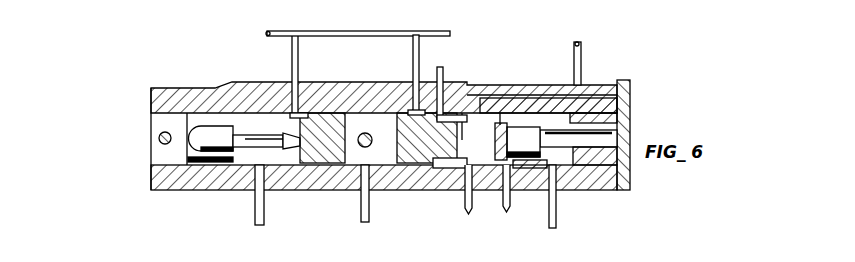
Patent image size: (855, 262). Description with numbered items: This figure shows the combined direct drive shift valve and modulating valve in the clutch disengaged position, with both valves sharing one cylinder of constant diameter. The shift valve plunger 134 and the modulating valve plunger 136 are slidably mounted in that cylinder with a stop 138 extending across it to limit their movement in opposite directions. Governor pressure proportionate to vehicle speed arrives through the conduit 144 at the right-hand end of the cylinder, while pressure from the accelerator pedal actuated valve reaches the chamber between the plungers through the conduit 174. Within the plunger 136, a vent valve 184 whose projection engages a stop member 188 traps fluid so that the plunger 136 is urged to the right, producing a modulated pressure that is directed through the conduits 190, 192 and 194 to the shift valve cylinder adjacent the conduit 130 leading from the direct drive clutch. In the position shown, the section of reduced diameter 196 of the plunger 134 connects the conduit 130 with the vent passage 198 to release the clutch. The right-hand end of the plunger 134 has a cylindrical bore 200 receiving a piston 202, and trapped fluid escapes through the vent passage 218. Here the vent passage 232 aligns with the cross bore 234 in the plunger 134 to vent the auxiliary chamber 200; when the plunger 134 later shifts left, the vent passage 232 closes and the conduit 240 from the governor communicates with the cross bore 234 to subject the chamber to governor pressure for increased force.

The conduit 130 is at (451, 81).
The plunger 134 is at (410, 153).
The plunger 136 is at (320, 157).
The stop 138 is at (366, 133).
The conduit 144 is at (583, 47).
The conduit 174 is at (367, 212).
The vent valve 184 is at (208, 128).
The stop member 188 is at (158, 139).
The conduit 190 is at (297, 52).
The conduit 192 is at (358, 32).
The conduit 194 is at (417, 65).
The section of reduced diameter 196 is at (449, 130).
The vent passage 198 is at (464, 210).
The cylindrical bore 200 is at (497, 172).
The piston 202 is at (527, 133).
The vent passage 218 is at (553, 202).
The vent passage 232 is at (509, 190).
The cross bore 234 is at (503, 125).
The conduit 240 is at (478, 110).